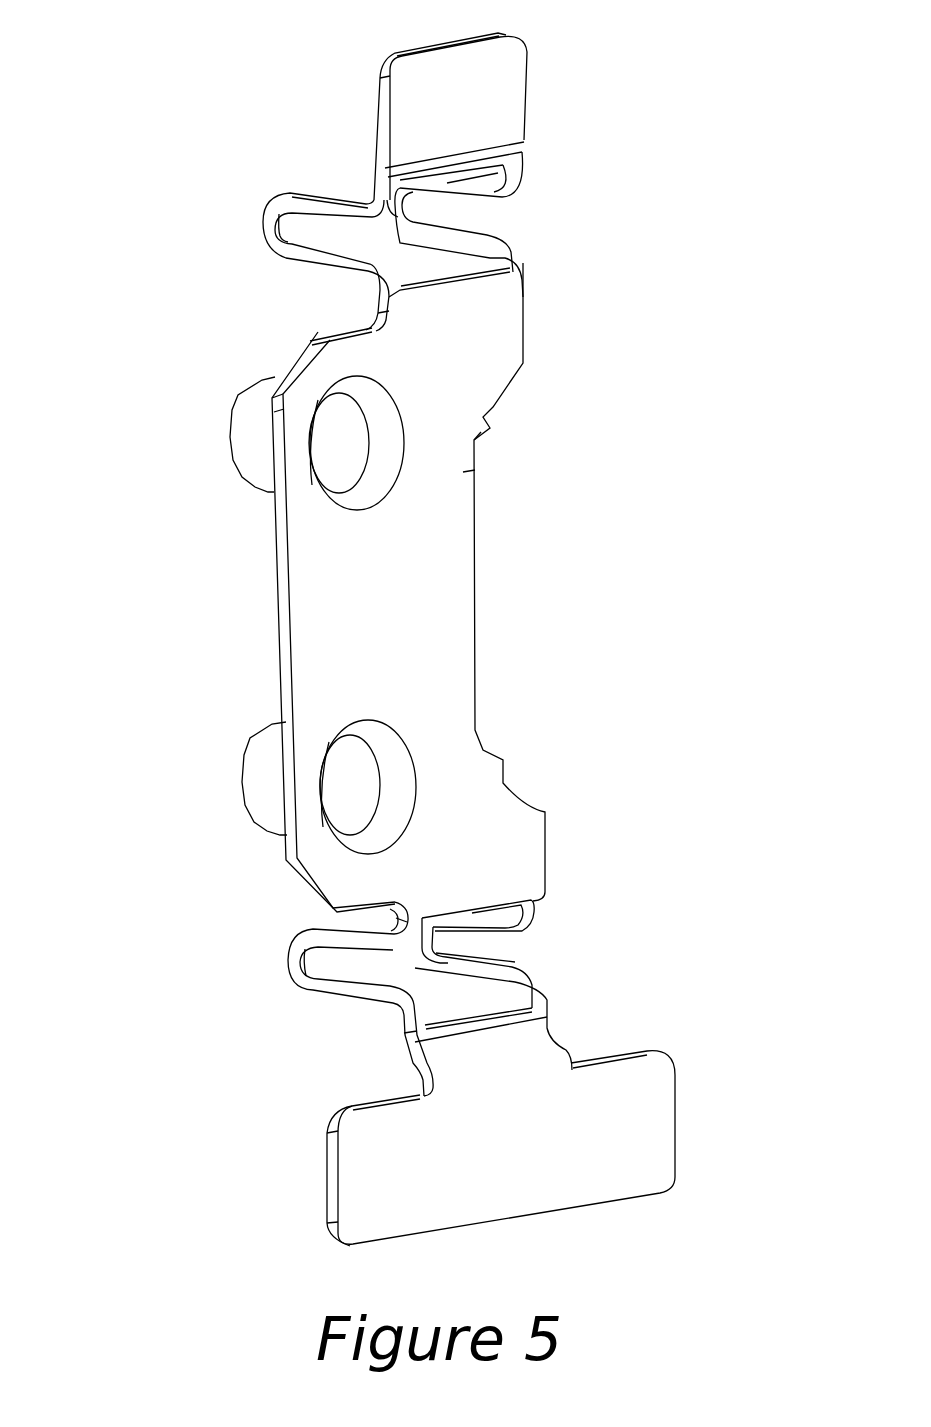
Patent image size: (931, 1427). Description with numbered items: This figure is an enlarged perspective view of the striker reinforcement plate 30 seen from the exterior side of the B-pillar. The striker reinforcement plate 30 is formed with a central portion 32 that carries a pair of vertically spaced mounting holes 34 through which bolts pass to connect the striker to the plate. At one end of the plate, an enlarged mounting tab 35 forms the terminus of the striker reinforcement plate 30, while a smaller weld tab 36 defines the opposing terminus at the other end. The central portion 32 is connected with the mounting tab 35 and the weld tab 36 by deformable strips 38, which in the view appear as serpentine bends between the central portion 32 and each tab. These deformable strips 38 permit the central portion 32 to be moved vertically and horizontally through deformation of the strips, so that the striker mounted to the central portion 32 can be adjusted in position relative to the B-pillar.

The striker reinforcement plate 30 is at (440, 627).
The central portion 32 is at (435, 622).
The mounting holes 34 is at (363, 473).
The mounting tab 35 is at (648, 1135).
The weld tab 36 is at (493, 92).
The deformable strips 38 is at (457, 237).